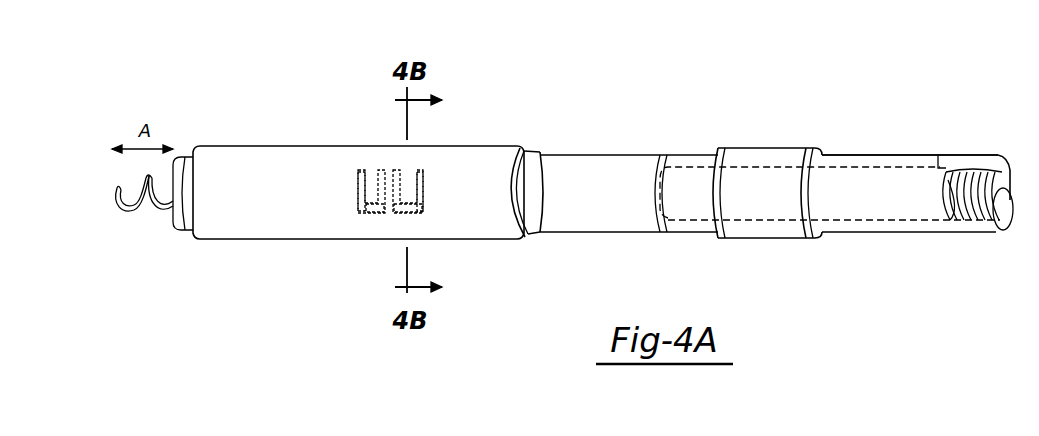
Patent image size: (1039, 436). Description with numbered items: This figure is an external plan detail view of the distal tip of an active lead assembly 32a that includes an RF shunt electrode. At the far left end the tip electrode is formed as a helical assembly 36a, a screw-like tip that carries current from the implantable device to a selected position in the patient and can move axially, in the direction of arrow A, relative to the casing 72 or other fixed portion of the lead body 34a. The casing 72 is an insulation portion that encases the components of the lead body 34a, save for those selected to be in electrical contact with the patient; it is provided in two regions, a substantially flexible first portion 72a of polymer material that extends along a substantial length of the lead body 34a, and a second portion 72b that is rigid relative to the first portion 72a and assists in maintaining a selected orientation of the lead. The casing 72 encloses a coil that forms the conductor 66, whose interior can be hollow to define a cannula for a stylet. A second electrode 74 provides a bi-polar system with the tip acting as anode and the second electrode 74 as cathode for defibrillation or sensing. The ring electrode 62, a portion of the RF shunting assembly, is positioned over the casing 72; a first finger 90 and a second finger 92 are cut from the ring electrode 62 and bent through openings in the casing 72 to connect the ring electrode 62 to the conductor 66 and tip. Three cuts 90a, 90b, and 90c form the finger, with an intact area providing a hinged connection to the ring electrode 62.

The lead assembly 32a is at (773, 128).
The lead body 34a is at (912, 152).
The helical assembly 36a is at (133, 213).
The ring electrode 62 is at (284, 215).
The conductor 66 is at (940, 160).
The casing 72 is at (916, 237).
The first portion 72a is at (850, 235).
The second portion 72b is at (525, 165).
The second electrode 74 is at (592, 170).
The first finger 90 is at (410, 185).
The cut 90a is at (390, 205).
The cut 90b is at (410, 215).
The cut 90c is at (420, 205).
The second finger 92 is at (370, 185).